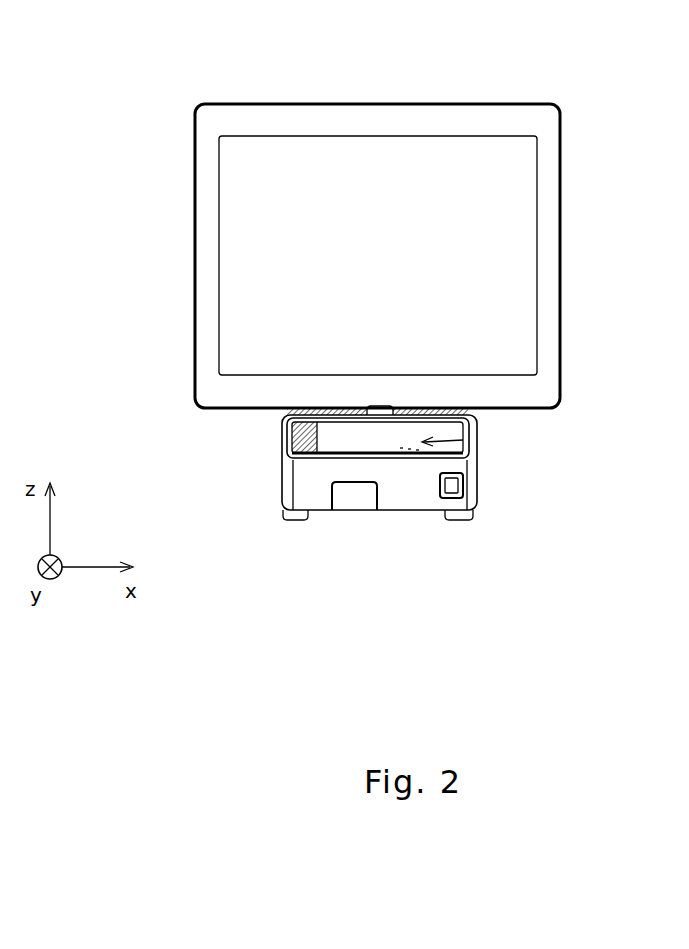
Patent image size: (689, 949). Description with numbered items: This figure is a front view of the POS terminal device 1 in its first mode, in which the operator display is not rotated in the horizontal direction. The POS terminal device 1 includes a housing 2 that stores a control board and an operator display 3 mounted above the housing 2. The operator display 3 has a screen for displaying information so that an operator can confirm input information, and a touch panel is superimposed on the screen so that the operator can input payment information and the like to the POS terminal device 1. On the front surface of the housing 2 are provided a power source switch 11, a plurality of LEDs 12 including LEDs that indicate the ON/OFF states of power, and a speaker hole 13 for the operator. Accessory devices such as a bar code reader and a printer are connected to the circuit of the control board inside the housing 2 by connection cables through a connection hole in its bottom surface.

The POS terminal device 1 is at (141, 50).
The housing 2 is at (372, 500).
The operator display 3 is at (207, 285).
The power source switch 11 is at (452, 490).
The LEDs 12 is at (477, 442).
The speaker hole 13 is at (281, 438).